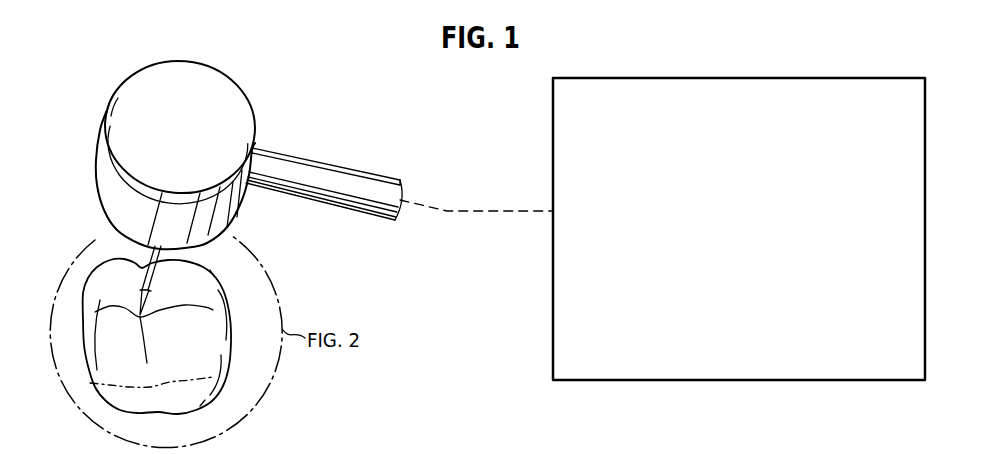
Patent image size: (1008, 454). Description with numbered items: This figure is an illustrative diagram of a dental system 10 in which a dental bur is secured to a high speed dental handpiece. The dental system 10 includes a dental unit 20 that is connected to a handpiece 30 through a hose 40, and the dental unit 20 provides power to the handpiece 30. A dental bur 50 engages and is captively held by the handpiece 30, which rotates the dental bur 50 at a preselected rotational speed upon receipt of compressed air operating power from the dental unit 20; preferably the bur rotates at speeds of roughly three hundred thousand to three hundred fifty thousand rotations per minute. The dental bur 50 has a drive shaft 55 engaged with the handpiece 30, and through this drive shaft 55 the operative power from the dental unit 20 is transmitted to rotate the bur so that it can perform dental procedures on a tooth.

The dental system 10 is at (104, 74).
The dental unit 20 is at (839, 372).
The handpiece 30 is at (227, 120).
The hose 40 is at (325, 180).
The dental bur 50 is at (172, 296).
The drive shaft 55 is at (142, 282).